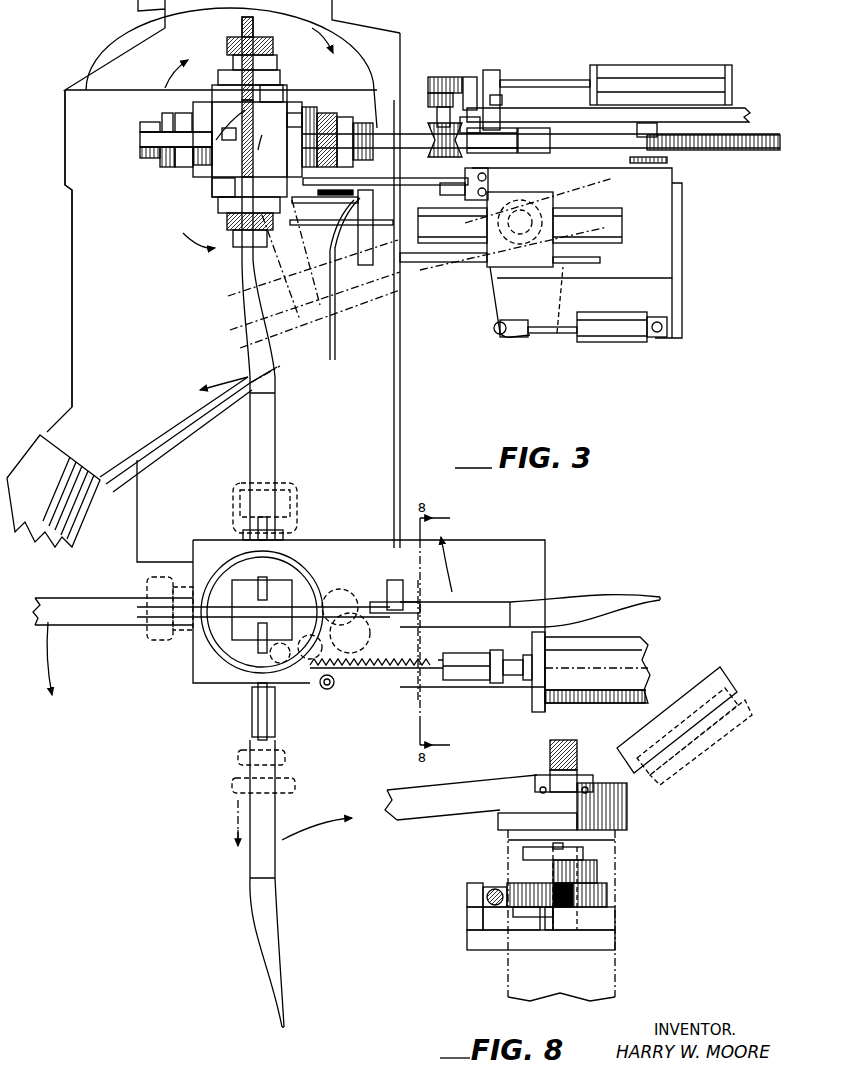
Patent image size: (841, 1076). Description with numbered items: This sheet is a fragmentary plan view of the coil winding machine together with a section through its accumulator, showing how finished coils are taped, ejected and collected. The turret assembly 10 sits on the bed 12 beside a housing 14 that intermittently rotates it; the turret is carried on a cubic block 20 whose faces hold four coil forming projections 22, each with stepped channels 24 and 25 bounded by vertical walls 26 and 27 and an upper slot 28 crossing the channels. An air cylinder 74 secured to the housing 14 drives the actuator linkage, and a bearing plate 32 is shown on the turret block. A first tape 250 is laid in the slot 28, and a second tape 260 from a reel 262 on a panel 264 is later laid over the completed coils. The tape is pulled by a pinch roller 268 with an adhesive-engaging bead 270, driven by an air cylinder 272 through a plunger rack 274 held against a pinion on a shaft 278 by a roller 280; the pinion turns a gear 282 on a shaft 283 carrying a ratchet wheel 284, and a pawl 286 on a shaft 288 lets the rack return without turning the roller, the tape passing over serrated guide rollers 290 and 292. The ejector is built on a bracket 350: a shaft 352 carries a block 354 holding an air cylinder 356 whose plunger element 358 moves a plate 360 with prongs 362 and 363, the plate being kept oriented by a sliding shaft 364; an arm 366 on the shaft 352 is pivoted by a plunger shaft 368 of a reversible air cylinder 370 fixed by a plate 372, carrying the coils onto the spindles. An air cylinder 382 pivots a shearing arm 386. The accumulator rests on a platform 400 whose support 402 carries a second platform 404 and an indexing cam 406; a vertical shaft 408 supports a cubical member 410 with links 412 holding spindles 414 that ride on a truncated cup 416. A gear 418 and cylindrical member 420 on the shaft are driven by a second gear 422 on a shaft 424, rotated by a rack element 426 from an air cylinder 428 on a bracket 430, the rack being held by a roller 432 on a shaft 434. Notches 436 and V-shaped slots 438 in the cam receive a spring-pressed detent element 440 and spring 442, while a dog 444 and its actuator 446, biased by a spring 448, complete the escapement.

In FIG. 3, the turret assembly 10 is at (205, 185).
In FIG. 3, the bed 12 is at (390, 437).
In FIG. 3, the housing 14 is at (70, 300).
In FIG. 3, the cubic block 20 is at (198, 176).
In FIG. 3, the coil forming projections 22 is at (254, 40).
In FIG. 3, the channel 24 is at (180, 120).
In FIG. 3, the channel 25 is at (162, 126).
In FIG. 3, the vertical wall 26 is at (230, 62).
In FIG. 3, the vertical wall 27 is at (242, 34).
In FIG. 3, the slot 28 is at (198, 142).
In FIG. 3, the bearing plate 32 is at (210, 96).
In FIG. 3, the air cylinder 74 is at (48, 522).
In FIG. 3, the tape 250 is at (250, 103).
In FIG. 3, the tape 260 is at (727, 148).
In FIG. 3, the reel 262 is at (762, 152).
In FIG. 3, the panel 264 is at (738, 114).
In FIG. 3, the pinch roller 268 is at (436, 146).
In FIG. 3, the bead 270 is at (372, 140).
In FIG. 3, the air cylinder 272 is at (672, 72).
In FIG. 3, the plunger rack 274 is at (555, 82).
In FIG. 3, the shaft 278 is at (470, 88).
In FIG. 3, the roller 280 is at (497, 80).
In FIG. 3, the gear 282 is at (442, 76).
In FIG. 3, the shaft 283 is at (442, 116).
In FIG. 3, the ratchet wheel 284 is at (436, 100).
In FIG. 3, the pawl 286 is at (470, 119).
In FIG. 3, the shaft 288 is at (502, 100).
In FIG. 3, the guide roller 290 is at (545, 152).
In FIG. 3, the guide roller 292 is at (507, 152).
In FIG. 3, the bracket 350 is at (675, 212).
In FIG. 3, the shaft 352 is at (525, 222).
In FIG. 3, the block 354 is at (495, 202).
In FIG. 3, the air cylinder 356 is at (612, 200).
In FIG. 3, the plunger element 358 is at (370, 222).
In FIG. 3, the plate 360 is at (355, 230).
In FIG. 3, the prong 362 is at (300, 204).
In FIG. 3, the prong 363 is at (300, 222).
In FIG. 3, the shaft 364 is at (583, 262).
In FIG. 3, the arm 366 is at (495, 297).
In FIG. 3, the plunger shaft 368 is at (532, 338).
In FIG. 3, the air cylinder 370 is at (615, 343).
In FIG. 3, the plate 372 is at (678, 294).
In FIG. 3, the air cylinder 382 is at (400, 172).
In FIG. 3, the arm 386 is at (430, 187).
In FIG. 8, the platform 400 is at (536, 552).
In FIG. 8, the support 402 is at (608, 970).
In FIG. 8, the platform 404 is at (360, 585).
In FIG. 8, the indexing cam 406 is at (605, 917).
In FIG. 8, the shaft 408 is at (570, 840).
In FIG. 8, the cubical member 410 is at (235, 578).
In FIG. 8, the links 412 is at (275, 585).
In FIG. 3, the spindles 414 is at (276, 395).
In FIG. 8, the spindles 414 is at (70, 620).
In FIG. 8, the truncated cup 416 is at (200, 632).
In FIG. 8, the gear 418 is at (295, 592).
In FIG. 8, the cylindrical member 420 is at (600, 870).
In FIG. 8, the gear 422 is at (328, 604).
In FIG. 8, the shaft 424 is at (345, 645).
In FIG. 8, the rack element 426 is at (390, 670).
In FIG. 8, the air cylinder 428 is at (638, 645).
In FIG. 8, the bracket 430 is at (545, 660).
In FIG. 8, the roller 432 is at (333, 686).
In FIG. 8, the shaft 434 is at (330, 690).
In FIG. 8, the notches 436 is at (552, 935).
In FIG. 8, the V-shaped slot 438 is at (572, 912).
In FIG. 8, the detent element 440 is at (530, 870).
In FIG. 8, the spring 442 is at (556, 855).
In FIG. 8, the dog 444 is at (282, 665).
In FIG. 8, the actuator 446 is at (322, 668).
In FIG. 8, the spring 448 is at (355, 636).